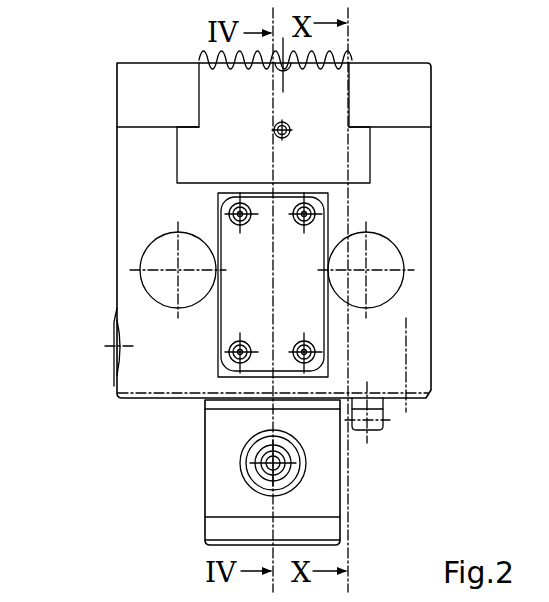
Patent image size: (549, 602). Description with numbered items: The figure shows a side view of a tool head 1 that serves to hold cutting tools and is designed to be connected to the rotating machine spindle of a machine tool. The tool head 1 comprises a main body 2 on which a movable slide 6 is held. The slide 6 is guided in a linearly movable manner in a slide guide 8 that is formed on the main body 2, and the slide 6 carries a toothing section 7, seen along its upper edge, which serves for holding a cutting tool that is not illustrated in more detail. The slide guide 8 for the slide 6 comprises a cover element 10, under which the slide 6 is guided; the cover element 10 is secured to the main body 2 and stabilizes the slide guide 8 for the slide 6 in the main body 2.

The tool head 1 is at (77, 110).
The main body 2 is at (418, 196).
The slide 6 is at (333, 109).
The toothing section 7 is at (207, 52).
The slide guide 8 is at (194, 188).
The cover element 10 is at (138, 62).